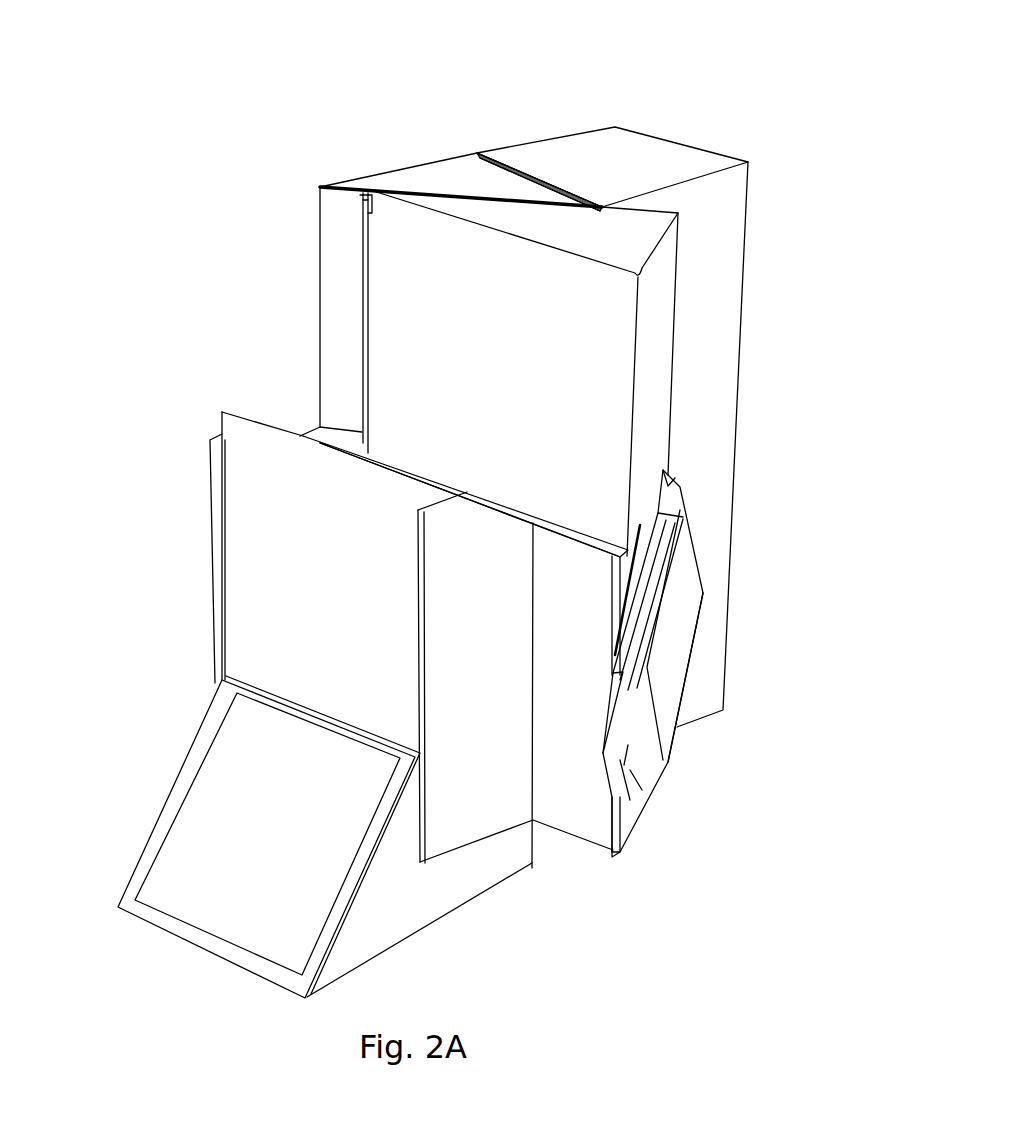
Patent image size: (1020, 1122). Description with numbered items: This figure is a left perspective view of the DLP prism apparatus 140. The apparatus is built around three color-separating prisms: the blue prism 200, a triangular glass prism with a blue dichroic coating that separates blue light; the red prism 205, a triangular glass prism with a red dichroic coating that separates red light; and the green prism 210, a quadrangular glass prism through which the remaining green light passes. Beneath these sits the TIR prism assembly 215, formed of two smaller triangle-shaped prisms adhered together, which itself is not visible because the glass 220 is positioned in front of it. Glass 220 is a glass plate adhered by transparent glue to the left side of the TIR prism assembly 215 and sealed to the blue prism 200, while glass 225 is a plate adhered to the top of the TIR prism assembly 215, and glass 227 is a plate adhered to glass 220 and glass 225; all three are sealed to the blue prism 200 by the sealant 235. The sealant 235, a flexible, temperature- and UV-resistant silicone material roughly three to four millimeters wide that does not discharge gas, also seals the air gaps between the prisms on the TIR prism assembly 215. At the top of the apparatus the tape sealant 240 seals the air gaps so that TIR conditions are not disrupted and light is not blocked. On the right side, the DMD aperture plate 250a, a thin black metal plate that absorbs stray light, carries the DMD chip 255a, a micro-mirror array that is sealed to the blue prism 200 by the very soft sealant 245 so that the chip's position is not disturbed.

The DLP prism apparatus 140 is at (193, 102).
The blue prism 200 is at (652, 282).
The red prism 205 is at (377, 173).
The green prism 210 is at (613, 131).
The TIR prism assembly 215 is at (216, 393).
The glass 220 is at (467, 812).
The glass 225 is at (498, 490).
The glass 227 is at (612, 856).
The sealant 235 is at (360, 330).
The tape sealant 240 is at (470, 193).
The sealant 245 is at (630, 660).
The DMD aperture plate 250a is at (680, 484).
The DMD chip 255a is at (688, 628).